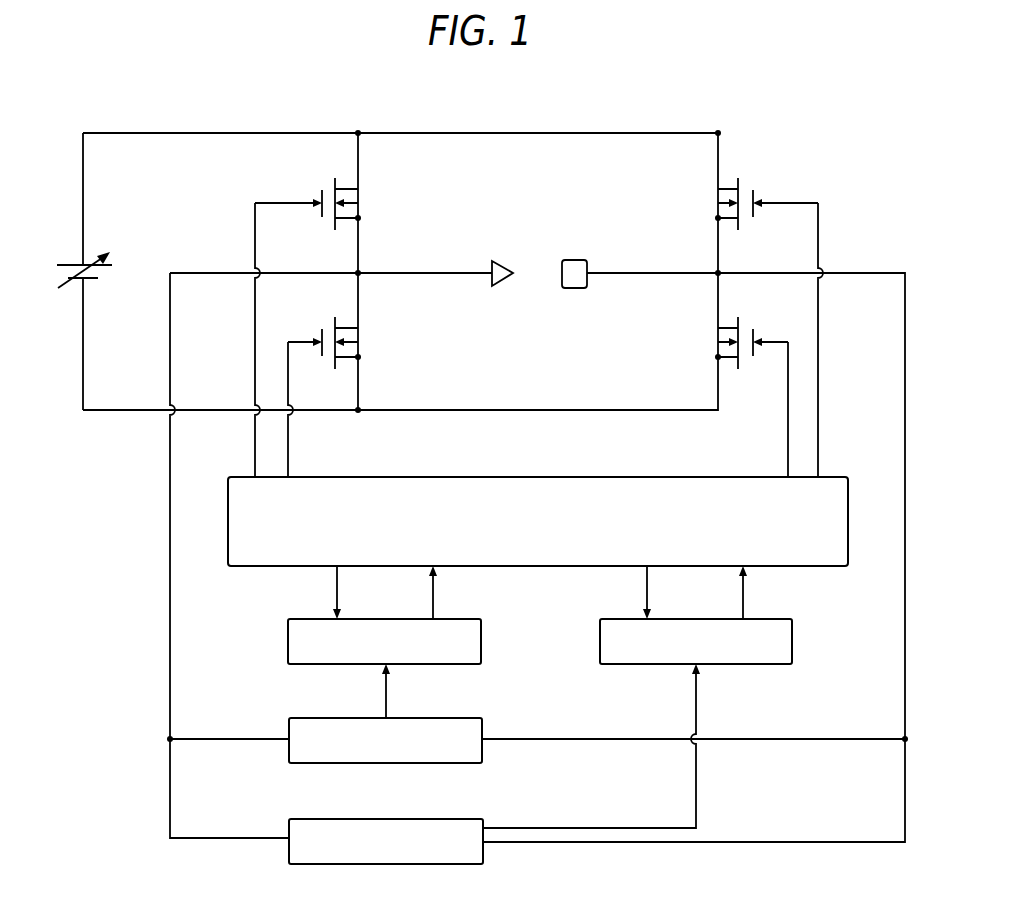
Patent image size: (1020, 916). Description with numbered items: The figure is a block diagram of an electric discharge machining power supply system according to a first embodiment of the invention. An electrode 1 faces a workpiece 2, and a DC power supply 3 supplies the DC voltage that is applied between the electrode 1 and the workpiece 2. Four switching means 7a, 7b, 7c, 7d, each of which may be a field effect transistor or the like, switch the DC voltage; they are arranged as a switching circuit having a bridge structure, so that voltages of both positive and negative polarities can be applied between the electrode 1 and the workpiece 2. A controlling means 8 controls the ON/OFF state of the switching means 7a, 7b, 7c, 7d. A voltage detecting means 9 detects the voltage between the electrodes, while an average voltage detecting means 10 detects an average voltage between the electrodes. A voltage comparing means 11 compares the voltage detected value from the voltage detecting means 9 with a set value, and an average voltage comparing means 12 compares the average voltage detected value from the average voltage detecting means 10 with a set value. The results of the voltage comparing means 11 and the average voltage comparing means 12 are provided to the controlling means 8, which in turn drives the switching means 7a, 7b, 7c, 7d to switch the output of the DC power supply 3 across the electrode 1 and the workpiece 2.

The electrode 1 is at (503, 262).
The workpiece 2 is at (572, 260).
The DC power supply 3 is at (69, 265).
The switching means 7a is at (330, 183).
The switching means 7b is at (747, 322).
The switching means 7c is at (330, 322).
The switching means 7d is at (747, 183).
The controlling means 8 is at (538, 477).
The voltage detecting means 9 is at (435, 718).
The average voltage detecting means 10 is at (390, 819).
The voltage comparing means 11 is at (481, 640).
The average voltage comparing means 12 is at (792, 640).